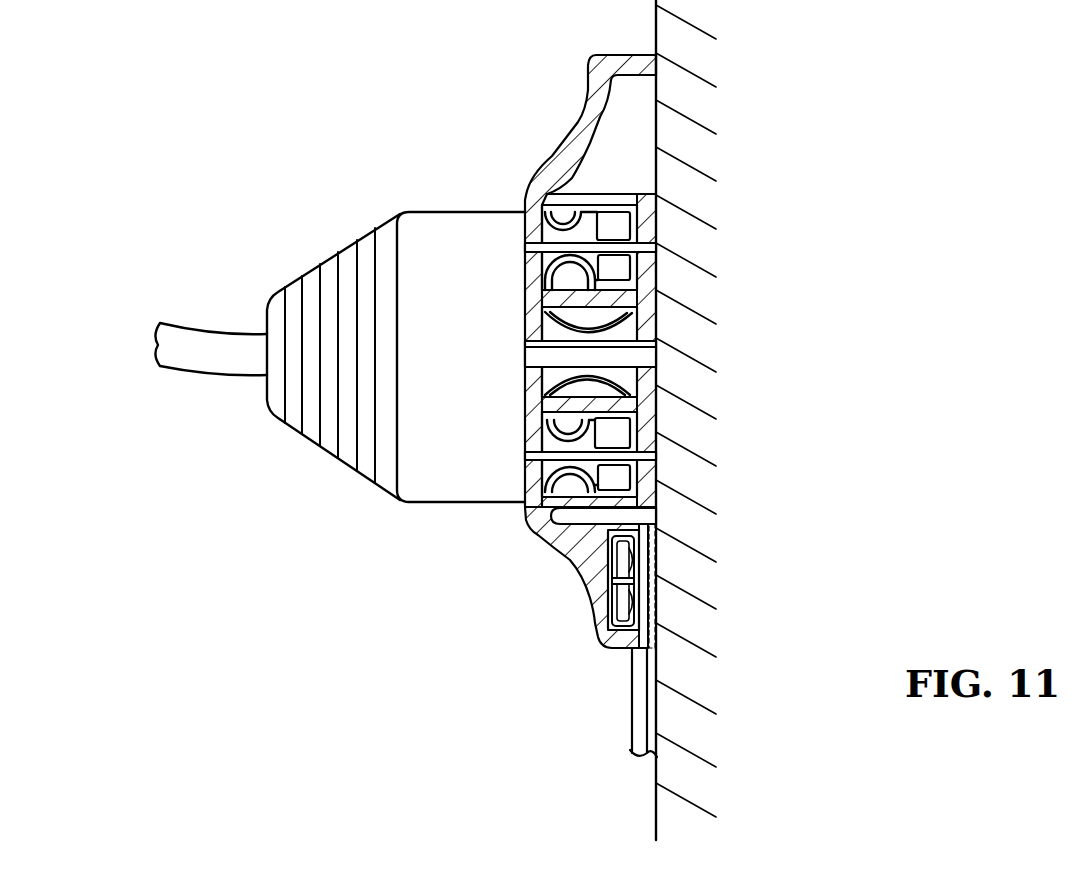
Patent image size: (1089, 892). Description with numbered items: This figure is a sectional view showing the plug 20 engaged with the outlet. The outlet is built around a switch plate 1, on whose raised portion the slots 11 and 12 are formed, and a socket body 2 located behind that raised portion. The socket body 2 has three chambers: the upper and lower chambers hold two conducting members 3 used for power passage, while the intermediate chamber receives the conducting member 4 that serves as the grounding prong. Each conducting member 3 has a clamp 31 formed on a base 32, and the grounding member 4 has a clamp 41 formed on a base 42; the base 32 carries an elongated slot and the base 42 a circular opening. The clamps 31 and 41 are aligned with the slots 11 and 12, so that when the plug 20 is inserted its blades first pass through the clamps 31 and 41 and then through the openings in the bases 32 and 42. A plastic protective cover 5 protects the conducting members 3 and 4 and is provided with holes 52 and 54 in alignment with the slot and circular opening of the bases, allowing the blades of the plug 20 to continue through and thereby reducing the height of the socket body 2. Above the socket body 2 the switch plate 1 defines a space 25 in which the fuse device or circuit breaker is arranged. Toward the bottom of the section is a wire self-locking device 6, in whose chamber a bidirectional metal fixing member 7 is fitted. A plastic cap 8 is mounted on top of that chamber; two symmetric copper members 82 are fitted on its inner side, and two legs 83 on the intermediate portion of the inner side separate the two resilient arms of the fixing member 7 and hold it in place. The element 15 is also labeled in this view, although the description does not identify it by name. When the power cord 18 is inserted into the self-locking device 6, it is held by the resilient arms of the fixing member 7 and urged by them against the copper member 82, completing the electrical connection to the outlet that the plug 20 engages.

The switch plate 1 is at (541, 379).
The socket body 2 is at (580, 187).
The conducting member 3 is at (734, 342).
The clamp 31 is at (607, 187).
The base 32 is at (633, 230).
The hole of the plastic protective cover 52 is at (660, 246).
The conducting member (grounding prong) 4 is at (696, 352).
The clamp 41 is at (657, 298).
The base 42 is at (633, 332).
The plastic protective cover 5 is at (779, 397).
The hole of the plastic protective cover 54 is at (633, 359).
The wire self-locking device 6 is at (617, 643).
The bidirectional metal fixing member 7 is at (610, 622).
The plastic cap 8 is at (718, 612).
The copper member 82 is at (657, 612).
The leg 83 is at (657, 602).
The slot 11 is at (545, 247).
The slot 12 is at (545, 358).
The panel 15 is at (660, 680).
The power cord 18 is at (627, 735).
The plug 20 is at (423, 487).
The space 25 is at (630, 122).